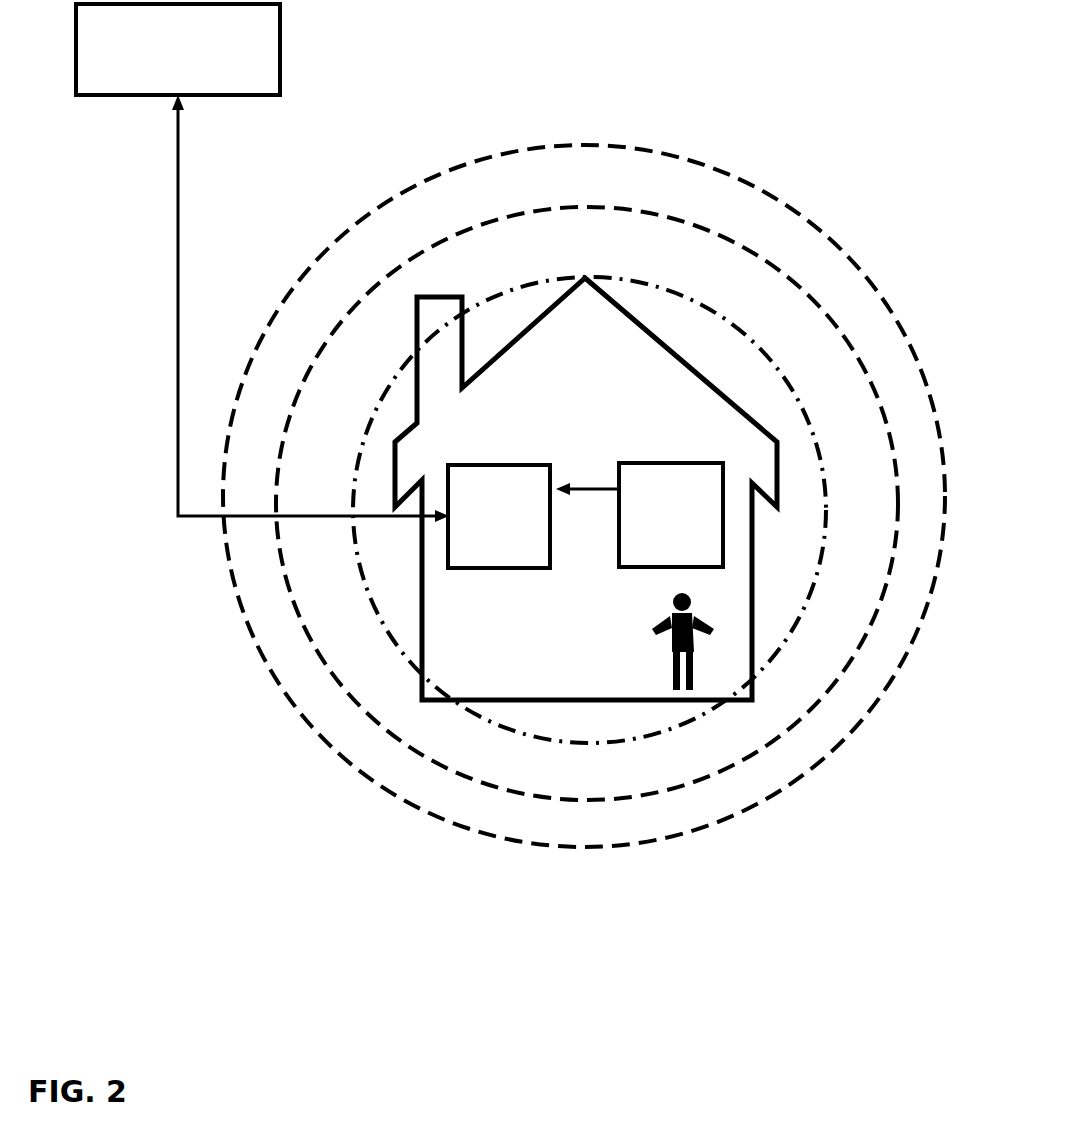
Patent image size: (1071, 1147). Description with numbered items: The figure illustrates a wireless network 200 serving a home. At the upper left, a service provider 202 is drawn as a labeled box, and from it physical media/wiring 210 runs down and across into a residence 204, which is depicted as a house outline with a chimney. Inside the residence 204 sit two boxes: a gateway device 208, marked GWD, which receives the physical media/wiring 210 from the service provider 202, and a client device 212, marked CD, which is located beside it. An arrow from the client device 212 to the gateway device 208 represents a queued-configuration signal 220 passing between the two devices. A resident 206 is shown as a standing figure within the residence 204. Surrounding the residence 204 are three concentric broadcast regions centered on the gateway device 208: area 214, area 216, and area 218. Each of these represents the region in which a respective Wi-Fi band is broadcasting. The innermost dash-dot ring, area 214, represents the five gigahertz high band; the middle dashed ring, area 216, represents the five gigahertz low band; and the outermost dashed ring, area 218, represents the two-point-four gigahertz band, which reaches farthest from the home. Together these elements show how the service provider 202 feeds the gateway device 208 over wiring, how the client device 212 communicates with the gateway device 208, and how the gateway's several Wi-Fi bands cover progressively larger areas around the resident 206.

The wireless network 200 is at (862, 100).
The service provider 202 is at (178, 49).
The residence 204 is at (586, 489).
The resident 206 is at (700, 651).
The gateway device 208 is at (499, 516).
The physical media/wiring 210 is at (178, 242).
The client device 212 is at (671, 515).
The area 214 is at (613, 742).
The area 216 is at (505, 793).
The area 218 is at (415, 813).
The queued-configuration signal 220 is at (580, 474).